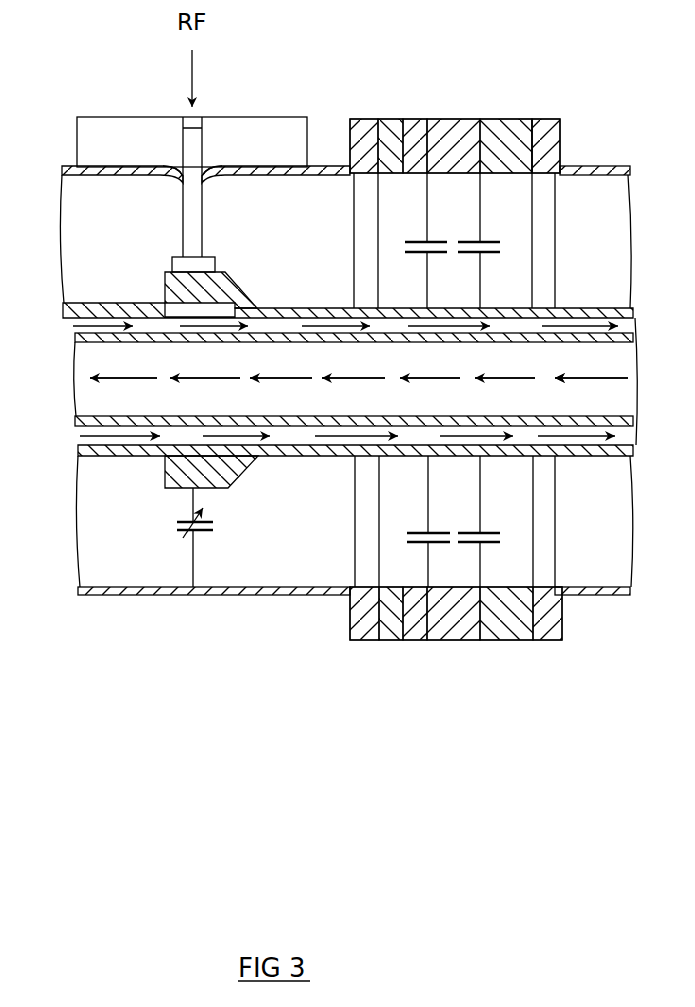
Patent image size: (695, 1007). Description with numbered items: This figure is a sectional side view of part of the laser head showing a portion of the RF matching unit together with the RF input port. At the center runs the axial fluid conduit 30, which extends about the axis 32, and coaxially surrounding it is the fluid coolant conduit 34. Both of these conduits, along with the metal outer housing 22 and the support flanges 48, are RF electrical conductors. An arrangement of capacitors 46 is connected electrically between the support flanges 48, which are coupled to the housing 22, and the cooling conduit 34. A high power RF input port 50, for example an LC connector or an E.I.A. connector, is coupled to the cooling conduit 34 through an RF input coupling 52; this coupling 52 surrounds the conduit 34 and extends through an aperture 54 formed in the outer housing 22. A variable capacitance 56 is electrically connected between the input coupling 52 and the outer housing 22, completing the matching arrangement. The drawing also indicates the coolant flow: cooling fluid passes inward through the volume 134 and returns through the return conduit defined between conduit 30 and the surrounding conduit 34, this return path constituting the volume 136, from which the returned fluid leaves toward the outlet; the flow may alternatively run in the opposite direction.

The outer housing 22 is at (322, 166).
The axial fluid conduit 30 is at (652, 337).
The axis 32 is at (360, 375).
The fluid coolant conduit 34 is at (590, 305).
The capacitors 46 is at (452, 228).
The support flanges 48 is at (404, 148).
The RF input port 50 is at (203, 150).
The RF input coupling 52 is at (165, 300).
The aperture 54 is at (176, 172).
The variable capacitance 56 is at (183, 536).
The volume 134 is at (345, 407).
The volume 136 is at (72, 430).